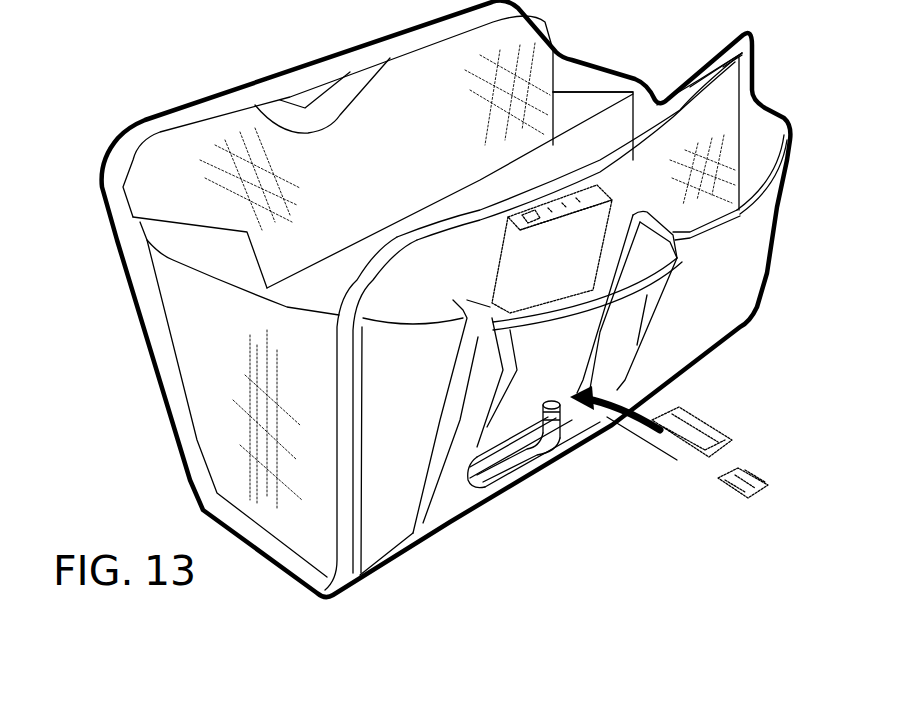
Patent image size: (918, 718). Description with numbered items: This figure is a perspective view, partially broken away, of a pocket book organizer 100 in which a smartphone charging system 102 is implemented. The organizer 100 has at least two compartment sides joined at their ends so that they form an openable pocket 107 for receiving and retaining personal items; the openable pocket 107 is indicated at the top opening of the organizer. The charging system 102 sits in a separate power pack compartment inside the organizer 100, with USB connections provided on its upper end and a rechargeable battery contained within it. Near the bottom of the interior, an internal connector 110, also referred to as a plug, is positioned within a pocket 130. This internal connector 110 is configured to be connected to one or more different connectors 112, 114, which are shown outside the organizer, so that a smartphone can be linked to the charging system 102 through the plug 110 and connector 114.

The pocket book organizer 100 is at (107, 107).
The smartphone charging system 102 is at (552, 249).
The openable pocket 107 is at (339, 228).
The internal connector 110 is at (560, 420).
The connector 112 is at (752, 477).
The connector 114 is at (695, 432).
The pocket 130 is at (450, 462).